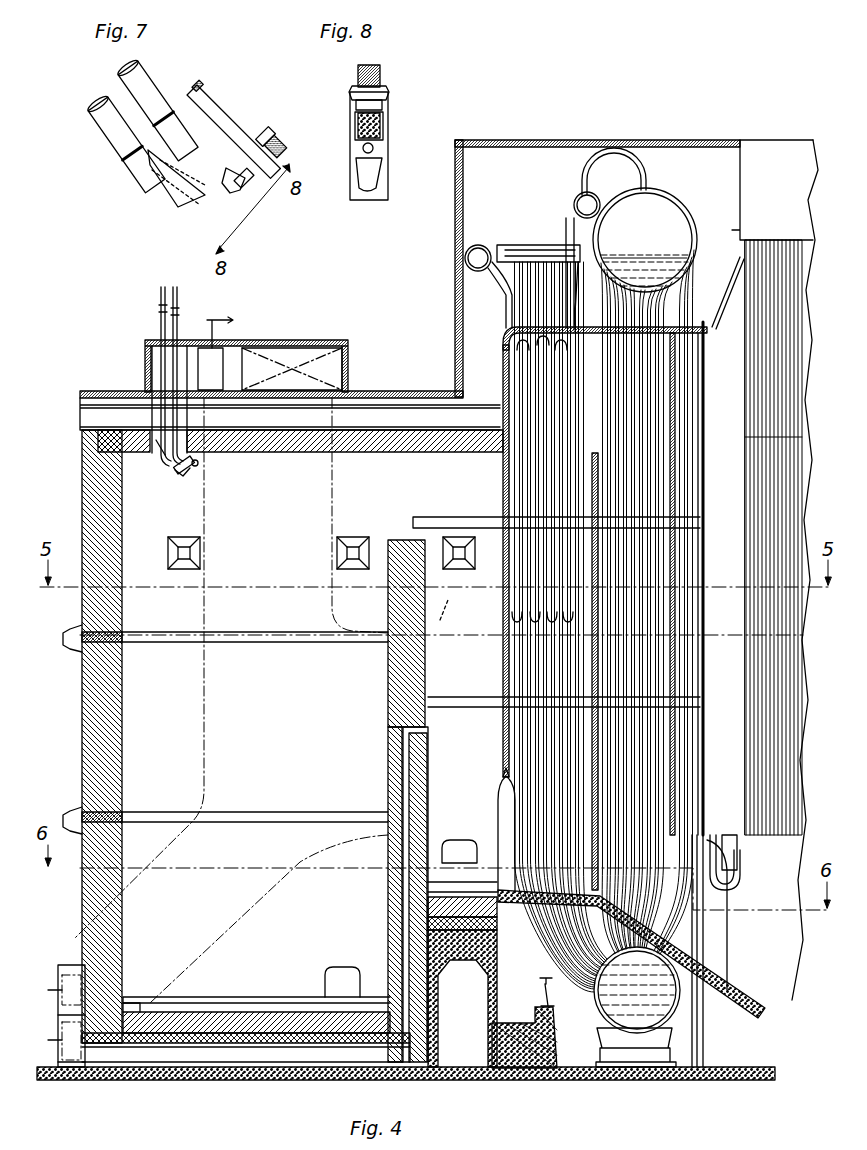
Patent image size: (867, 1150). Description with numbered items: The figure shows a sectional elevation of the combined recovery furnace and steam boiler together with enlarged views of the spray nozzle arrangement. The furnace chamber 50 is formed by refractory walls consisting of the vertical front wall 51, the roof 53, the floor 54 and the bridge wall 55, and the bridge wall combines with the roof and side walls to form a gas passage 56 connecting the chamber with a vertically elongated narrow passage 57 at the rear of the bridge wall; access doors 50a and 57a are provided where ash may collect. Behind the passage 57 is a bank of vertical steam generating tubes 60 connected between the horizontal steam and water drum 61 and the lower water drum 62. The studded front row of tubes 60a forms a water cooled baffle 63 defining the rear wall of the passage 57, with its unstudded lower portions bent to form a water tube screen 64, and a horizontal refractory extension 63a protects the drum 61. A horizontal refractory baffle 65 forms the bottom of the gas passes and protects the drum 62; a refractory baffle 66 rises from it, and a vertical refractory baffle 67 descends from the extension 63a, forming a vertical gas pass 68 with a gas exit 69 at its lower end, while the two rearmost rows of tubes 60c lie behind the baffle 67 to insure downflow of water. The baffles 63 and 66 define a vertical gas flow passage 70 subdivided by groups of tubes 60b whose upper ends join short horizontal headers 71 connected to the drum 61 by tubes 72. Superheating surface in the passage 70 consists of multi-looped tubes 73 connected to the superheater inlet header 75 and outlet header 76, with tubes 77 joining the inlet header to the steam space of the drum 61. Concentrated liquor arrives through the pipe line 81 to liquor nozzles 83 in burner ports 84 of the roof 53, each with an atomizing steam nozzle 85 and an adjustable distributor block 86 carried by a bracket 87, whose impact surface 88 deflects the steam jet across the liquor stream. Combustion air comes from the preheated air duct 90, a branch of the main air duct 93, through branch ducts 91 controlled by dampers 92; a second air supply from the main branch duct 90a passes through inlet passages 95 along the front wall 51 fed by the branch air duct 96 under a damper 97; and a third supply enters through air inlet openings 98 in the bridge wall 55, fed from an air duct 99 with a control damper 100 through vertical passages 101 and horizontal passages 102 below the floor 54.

In FIG. 4, the furnace chamber 50 is at (258, 739).
In FIG. 4, the access door 50a is at (345, 967).
In FIG. 4, the front wall 51 is at (120, 703).
In FIG. 4, the roof 53 is at (282, 455).
In FIG. 4, the floor 54 is at (258, 1010).
In FIG. 4, the bridge wall 55 is at (388, 684).
In FIG. 4, the gas passage 56 is at (408, 500).
In FIG. 4, the passage 57 is at (470, 681).
In FIG. 4, the access door 57a is at (461, 851).
In FIG. 4, the steam generating tubes 60 is at (655, 510).
In FIG. 4, the front row of tubes 60a is at (612, 258).
In FIG. 4, the steam generating tubes 60b is at (535, 650).
In FIG. 4, the two rearmost rows of tubes 60c is at (680, 740).
In FIG. 4, the steam and water drum 61 is at (688, 208).
In FIG. 4, the lower water drum 62 is at (603, 1000).
In FIG. 4, the water cooled baffle 63 is at (503, 741).
In FIG. 4, the horizontal refractory extension 63a is at (692, 338).
In FIG. 4, the water tube screen 64 is at (500, 825).
In FIG. 4, the refractory baffle 65 is at (752, 1000).
In FIG. 4, the refractory baffle 66 is at (593, 740).
In FIG. 4, the vertical refractory baffle 67 is at (675, 465).
In FIG. 4, the vertical gas pass 68 is at (642, 572).
In FIG. 4, the gas exit 69 is at (752, 936).
In FIG. 4, the vertical gas flow passage 70 is at (560, 691).
In FIG. 4, the short horizontal header 71 is at (505, 245).
In FIG. 4, the tubes 72 is at (540, 245).
In FIG. 4, the multi-looped tubes 73 is at (530, 492).
In FIG. 4, the superheater inlet header 75 is at (580, 194).
In FIG. 4, the superheater outlet header 76 is at (478, 245).
In FIG. 4, the tubes 77 is at (647, 170).
In FIG. 7, the pipe line 81 is at (103, 125).
In FIG. 4, the pipe line 81 is at (160, 322).
In FIG. 7, the liquor nozzle 83 is at (178, 198).
In FIG. 8, the liquor nozzle 83 is at (374, 164).
In FIG. 4, the liquor nozzle 83 is at (178, 474).
In FIG. 4, the burner port 84 is at (158, 455).
In FIG. 7, the atomizing steam nozzle 85 is at (205, 120).
In FIG. 4, the atomizing steam nozzle 85 is at (184, 472).
In FIG. 7, the adjustable distributor block 86 is at (247, 185).
In FIG. 8, the adjustable distributor block 86 is at (381, 118).
In FIG. 4, the adjustable distributor block 86 is at (198, 466).
In FIG. 7, the bracket 87 is at (240, 140).
In FIG. 8, the bracket 87 is at (389, 142).
In FIG. 7, the impact surface 88 is at (230, 185).
In FIG. 4, the preheated air duct 90 is at (290, 348).
In FIG. 4, the main branch duct 90a is at (250, 912).
In FIG. 4, the branch duct 91 is at (145, 364).
In FIG. 4, the damper 92 is at (220, 348).
In FIG. 4, the main air duct 93 is at (444, 605).
In FIG. 4, the inlet passages 95 is at (138, 1000).
In FIG. 4, the branch air duct 96 is at (60, 965).
In FIG. 4, the damper 97 is at (62, 1003).
In FIG. 4, the air inlet openings 98 is at (420, 732).
In FIG. 4, the air duct 99 is at (75, 1063).
In FIG. 4, the control damper 100 is at (62, 1050).
In FIG. 4, the vertical passages 101 is at (410, 885).
In FIG. 4, the horizontal passages 102 is at (270, 1082).